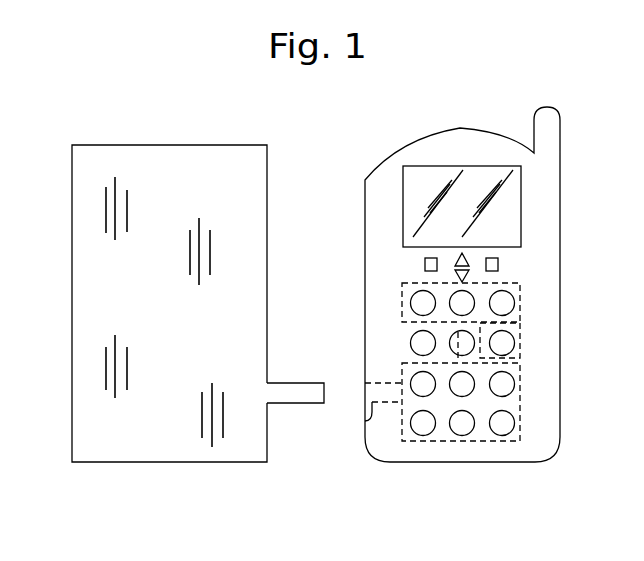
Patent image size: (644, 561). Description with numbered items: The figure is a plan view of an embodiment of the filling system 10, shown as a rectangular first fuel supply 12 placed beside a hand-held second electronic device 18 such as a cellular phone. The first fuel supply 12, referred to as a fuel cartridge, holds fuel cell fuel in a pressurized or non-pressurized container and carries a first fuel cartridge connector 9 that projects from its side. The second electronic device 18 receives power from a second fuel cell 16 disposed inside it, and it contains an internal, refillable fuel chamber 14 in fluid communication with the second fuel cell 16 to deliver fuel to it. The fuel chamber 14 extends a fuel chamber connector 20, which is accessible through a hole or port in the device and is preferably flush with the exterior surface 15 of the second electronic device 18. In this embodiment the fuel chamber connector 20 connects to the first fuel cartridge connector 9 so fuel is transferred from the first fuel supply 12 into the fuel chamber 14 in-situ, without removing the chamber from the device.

The filling system 10 is at (220, 105).
The first fuel supply 12 is at (135, 463).
The first fuel cartridge connector 9 is at (287, 382).
The exterior surface 15 is at (365, 305).
The second electronic device 18 is at (560, 351).
The second fuel cell 16 is at (520, 301).
The refillable fuel chamber 14 is at (520, 416).
The fuel chamber connector 20 is at (365, 421).